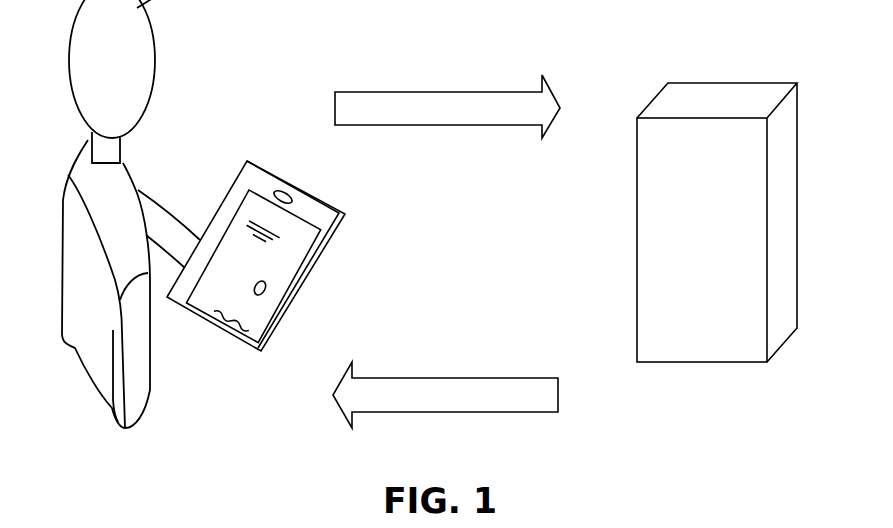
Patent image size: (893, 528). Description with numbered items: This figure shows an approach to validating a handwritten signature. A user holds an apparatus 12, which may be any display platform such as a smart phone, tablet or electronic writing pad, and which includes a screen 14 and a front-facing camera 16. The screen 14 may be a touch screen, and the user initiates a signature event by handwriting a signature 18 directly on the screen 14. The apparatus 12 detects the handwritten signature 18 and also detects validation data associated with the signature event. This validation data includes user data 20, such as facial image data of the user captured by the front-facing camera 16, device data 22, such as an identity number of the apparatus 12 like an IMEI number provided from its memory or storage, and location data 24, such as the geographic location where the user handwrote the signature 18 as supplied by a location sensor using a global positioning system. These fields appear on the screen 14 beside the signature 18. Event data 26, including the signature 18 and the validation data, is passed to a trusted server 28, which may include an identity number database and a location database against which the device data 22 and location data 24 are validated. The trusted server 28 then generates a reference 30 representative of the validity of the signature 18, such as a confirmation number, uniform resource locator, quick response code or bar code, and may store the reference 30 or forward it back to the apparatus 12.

The apparatus 12 is at (294, 199).
The screen 14 is at (230, 217).
The front-facing camera 16 is at (275, 193).
The signature 18 is at (253, 328).
The user data 20 is at (265, 291).
The device data 22 is at (262, 267).
The location data 24 is at (283, 237).
The event data 26 is at (447, 106).
The trusted server 28 is at (717, 222).
The reference 30 is at (445, 395).